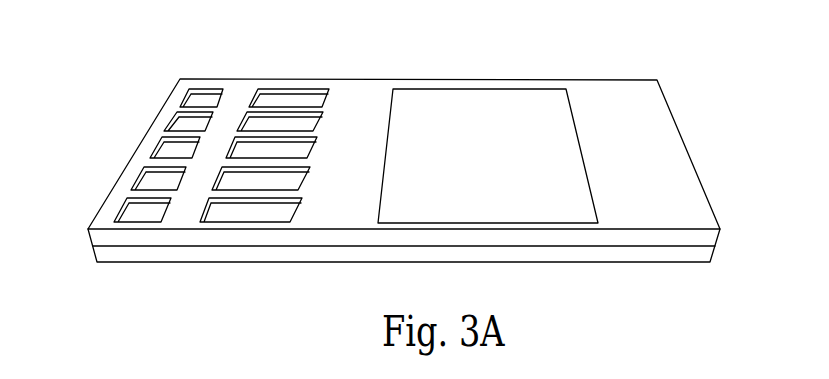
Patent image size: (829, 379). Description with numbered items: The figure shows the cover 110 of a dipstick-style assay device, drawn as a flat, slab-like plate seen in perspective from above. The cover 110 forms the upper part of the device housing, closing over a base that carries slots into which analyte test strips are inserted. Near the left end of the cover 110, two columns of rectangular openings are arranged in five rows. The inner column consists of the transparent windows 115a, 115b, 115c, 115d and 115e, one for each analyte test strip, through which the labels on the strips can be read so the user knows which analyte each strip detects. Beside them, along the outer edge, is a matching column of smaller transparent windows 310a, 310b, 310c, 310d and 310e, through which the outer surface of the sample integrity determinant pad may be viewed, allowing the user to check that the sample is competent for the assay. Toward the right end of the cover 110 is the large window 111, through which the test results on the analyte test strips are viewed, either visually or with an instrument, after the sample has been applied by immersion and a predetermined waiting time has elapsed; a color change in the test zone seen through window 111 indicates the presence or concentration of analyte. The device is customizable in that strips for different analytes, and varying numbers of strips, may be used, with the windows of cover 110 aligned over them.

The cover 110 is at (683, 142).
The window 111 is at (488, 170).
The transparent window 115a is at (272, 90).
The transparent window 115b is at (287, 122).
The transparent window 115c is at (307, 150).
The transparent window 115d is at (298, 182).
The transparent window 115e is at (264, 213).
The transparent window 310a is at (197, 100).
The transparent window 310b is at (182, 120).
The transparent window 310c is at (168, 152).
The transparent window 310d is at (147, 183).
The transparent window 310e is at (135, 213).